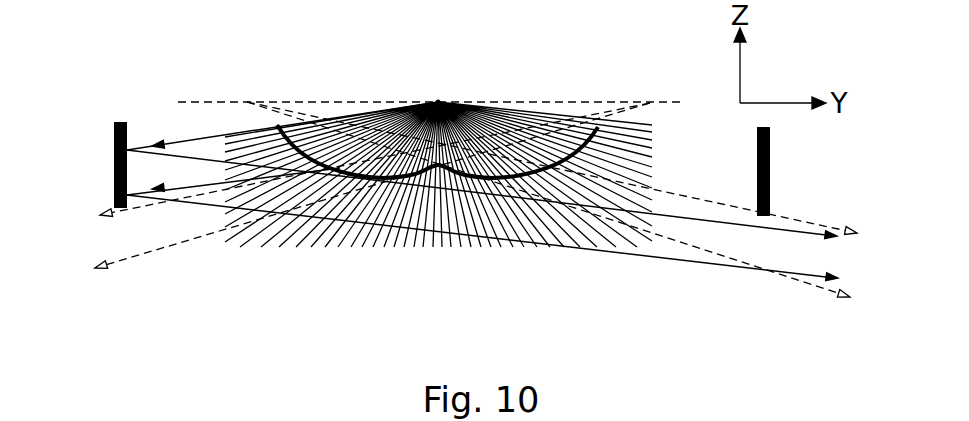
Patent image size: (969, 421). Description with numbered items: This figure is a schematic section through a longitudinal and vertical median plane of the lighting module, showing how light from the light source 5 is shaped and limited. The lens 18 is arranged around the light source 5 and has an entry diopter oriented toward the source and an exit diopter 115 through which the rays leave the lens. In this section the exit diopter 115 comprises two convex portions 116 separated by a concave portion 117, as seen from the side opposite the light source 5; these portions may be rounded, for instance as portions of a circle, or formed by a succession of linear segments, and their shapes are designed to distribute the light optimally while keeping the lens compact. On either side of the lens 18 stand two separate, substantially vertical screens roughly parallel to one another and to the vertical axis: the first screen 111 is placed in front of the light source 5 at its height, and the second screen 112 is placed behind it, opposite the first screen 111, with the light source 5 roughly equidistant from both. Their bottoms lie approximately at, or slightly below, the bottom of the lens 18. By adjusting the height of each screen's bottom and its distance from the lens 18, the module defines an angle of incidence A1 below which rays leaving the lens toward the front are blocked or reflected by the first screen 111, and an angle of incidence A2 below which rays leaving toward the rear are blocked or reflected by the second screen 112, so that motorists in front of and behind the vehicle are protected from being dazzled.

The light source 5 is at (441, 102).
The lens 18 is at (447, 180).
The first screen 111 is at (114, 128).
The second screen 112 is at (770, 170).
The exit diopter 115 is at (247, 132).
The convex portions 116 is at (322, 163).
The concave portion 117 is at (447, 168).
The angle of incidence A1 is at (595, 118).
The angle of incidence A2 is at (282, 107).